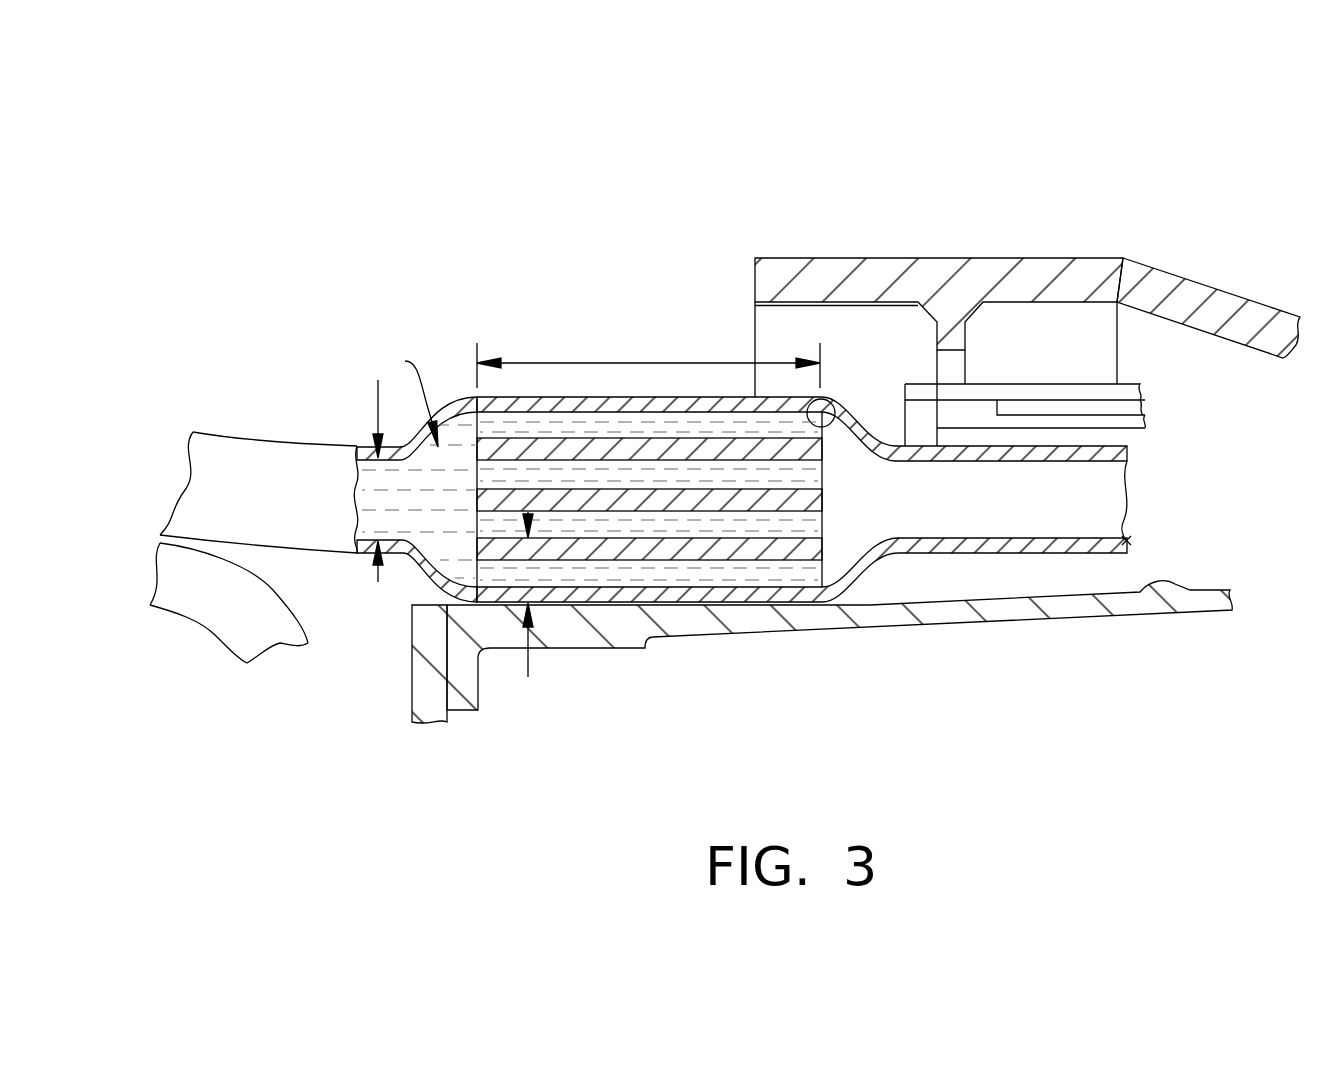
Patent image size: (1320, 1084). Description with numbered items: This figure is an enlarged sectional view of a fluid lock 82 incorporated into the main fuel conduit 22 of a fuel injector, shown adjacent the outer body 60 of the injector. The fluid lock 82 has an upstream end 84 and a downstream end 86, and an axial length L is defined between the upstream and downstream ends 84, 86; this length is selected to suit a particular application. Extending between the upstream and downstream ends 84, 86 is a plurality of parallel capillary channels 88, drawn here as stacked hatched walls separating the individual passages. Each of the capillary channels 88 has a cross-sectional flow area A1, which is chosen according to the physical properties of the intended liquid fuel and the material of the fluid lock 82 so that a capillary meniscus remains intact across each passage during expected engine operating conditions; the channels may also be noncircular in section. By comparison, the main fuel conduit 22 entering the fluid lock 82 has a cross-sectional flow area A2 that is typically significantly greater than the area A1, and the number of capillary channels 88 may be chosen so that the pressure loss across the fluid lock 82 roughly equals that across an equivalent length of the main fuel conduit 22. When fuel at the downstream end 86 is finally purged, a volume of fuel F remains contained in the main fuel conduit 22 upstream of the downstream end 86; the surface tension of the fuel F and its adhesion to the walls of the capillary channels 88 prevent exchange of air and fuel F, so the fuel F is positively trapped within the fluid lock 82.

The main fuel conduit 22 is at (253, 503).
The outer body 60 is at (1093, 272).
The fluid lock 82 is at (387, 608).
The upstream end 84 is at (462, 571).
The downstream end 86 is at (846, 474).
The capillary channels 88 is at (833, 397).
The axial length L is at (649, 362).
The fuel F is at (413, 396).
The cross-sectional flow area of capillary channel A1 is at (528, 658).
The cross-sectional flow area of main fuel conduit A2 is at (378, 400).